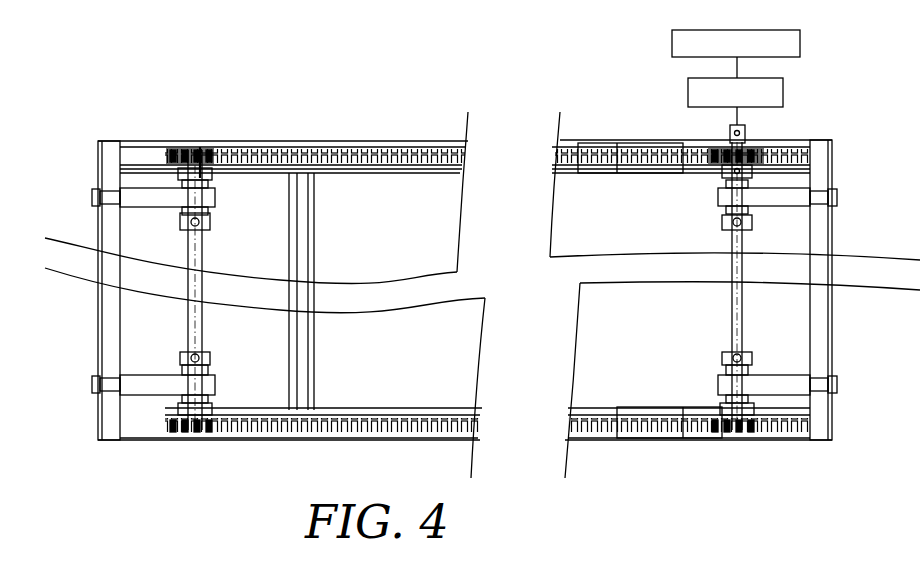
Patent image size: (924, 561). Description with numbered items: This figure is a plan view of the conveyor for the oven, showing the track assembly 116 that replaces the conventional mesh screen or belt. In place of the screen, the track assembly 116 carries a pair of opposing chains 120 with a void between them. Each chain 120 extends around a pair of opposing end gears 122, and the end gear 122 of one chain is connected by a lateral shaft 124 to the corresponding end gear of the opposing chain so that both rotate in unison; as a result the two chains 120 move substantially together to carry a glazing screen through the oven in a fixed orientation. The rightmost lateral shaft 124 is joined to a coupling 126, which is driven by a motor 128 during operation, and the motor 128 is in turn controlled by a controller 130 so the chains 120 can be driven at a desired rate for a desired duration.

The track assembly 116 is at (163, 100).
The chain 120 is at (376, 150).
The end gear 122 is at (198, 132).
The lateral shaft 124 is at (183, 330).
The coupling 126 is at (727, 135).
The motor 128 is at (783, 92).
The controller 130 is at (800, 44).